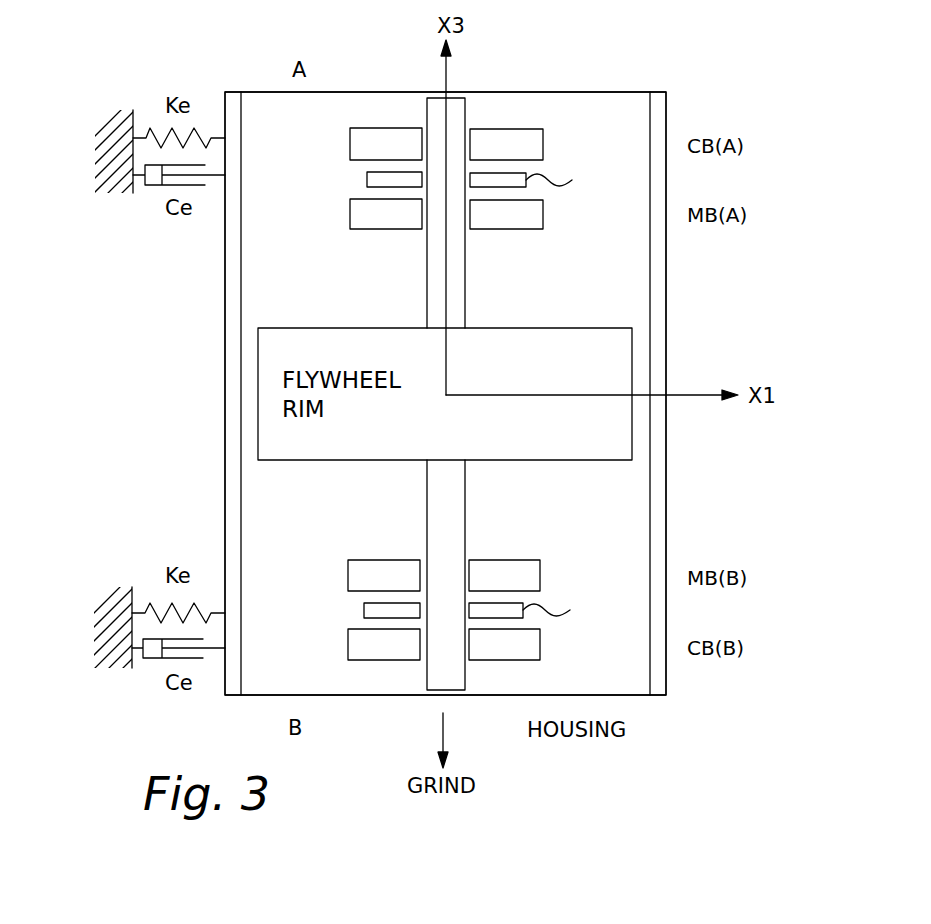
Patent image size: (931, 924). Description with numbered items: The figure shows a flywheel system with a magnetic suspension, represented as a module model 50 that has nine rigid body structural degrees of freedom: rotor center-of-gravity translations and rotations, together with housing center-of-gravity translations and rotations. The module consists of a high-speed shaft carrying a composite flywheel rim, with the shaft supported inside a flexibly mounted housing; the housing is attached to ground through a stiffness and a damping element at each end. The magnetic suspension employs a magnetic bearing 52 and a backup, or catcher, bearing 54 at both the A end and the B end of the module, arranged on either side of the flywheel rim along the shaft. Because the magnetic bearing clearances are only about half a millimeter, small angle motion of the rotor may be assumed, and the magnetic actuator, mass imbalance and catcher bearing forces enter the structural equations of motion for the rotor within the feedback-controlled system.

The module model 50 is at (708, 62).
The magnetic bearing 52 is at (350, 212).
The backup bearing 54 is at (350, 142).